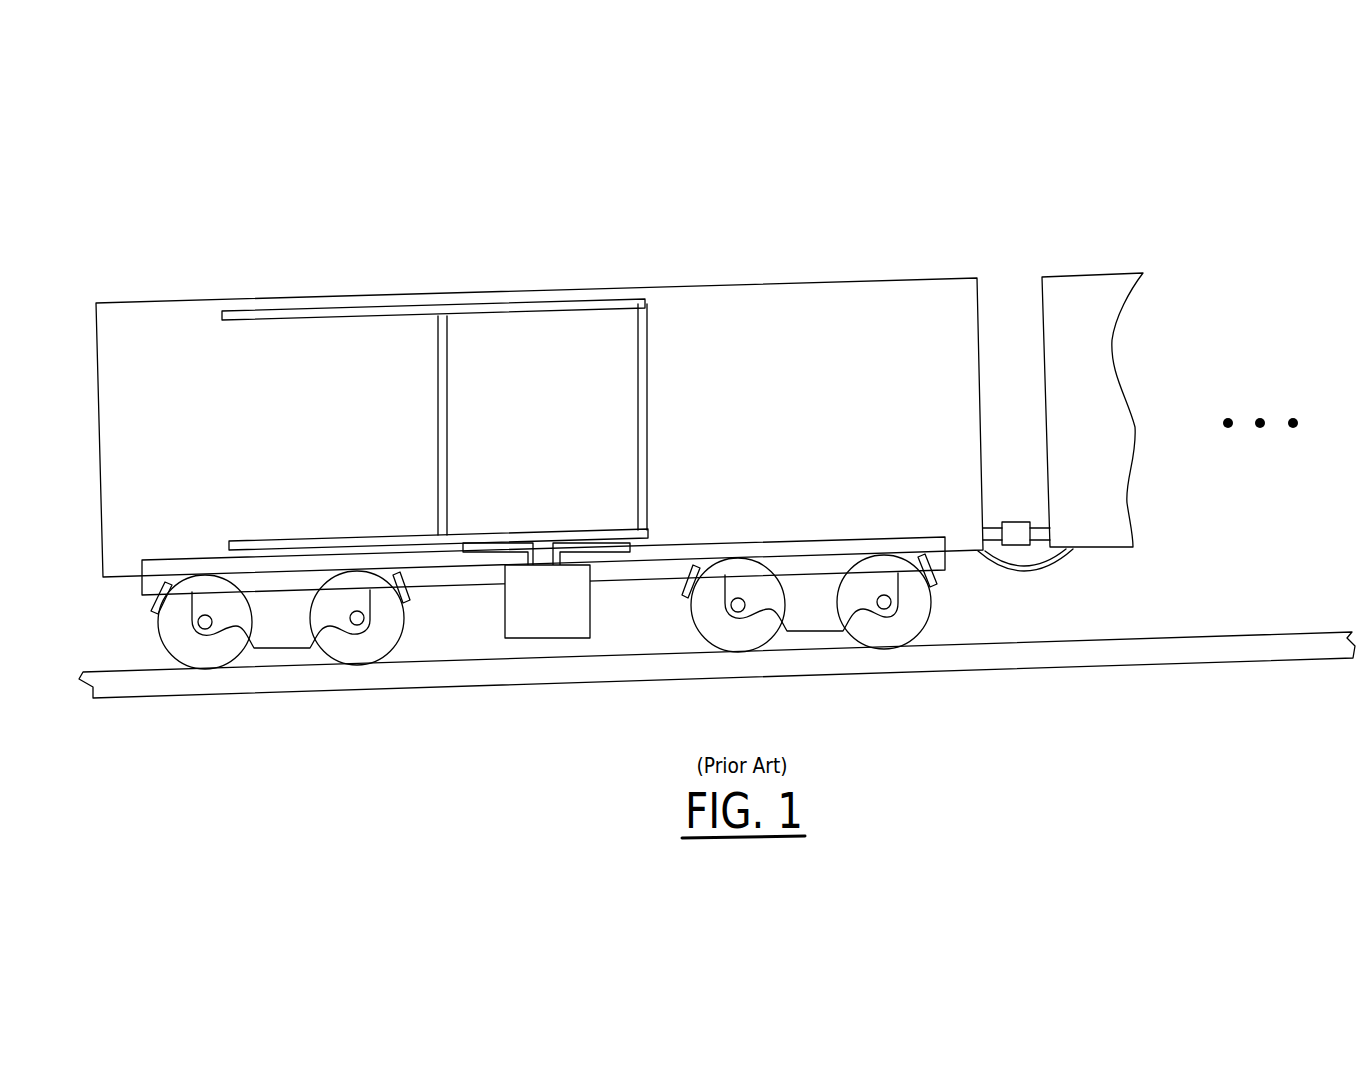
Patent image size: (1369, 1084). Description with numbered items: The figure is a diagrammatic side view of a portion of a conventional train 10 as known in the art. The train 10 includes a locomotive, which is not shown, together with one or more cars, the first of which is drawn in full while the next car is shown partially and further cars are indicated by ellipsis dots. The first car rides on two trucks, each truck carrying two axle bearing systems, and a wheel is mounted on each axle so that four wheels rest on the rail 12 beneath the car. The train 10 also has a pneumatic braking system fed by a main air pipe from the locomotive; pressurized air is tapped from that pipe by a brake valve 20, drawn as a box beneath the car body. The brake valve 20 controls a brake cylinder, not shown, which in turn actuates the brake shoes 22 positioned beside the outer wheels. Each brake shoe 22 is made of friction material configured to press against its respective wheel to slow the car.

The train 10 is at (694, 214).
The track rail 12 is at (1177, 630).
The brake valve 20 is at (590, 608).
The brake shoe 22 is at (152, 606).